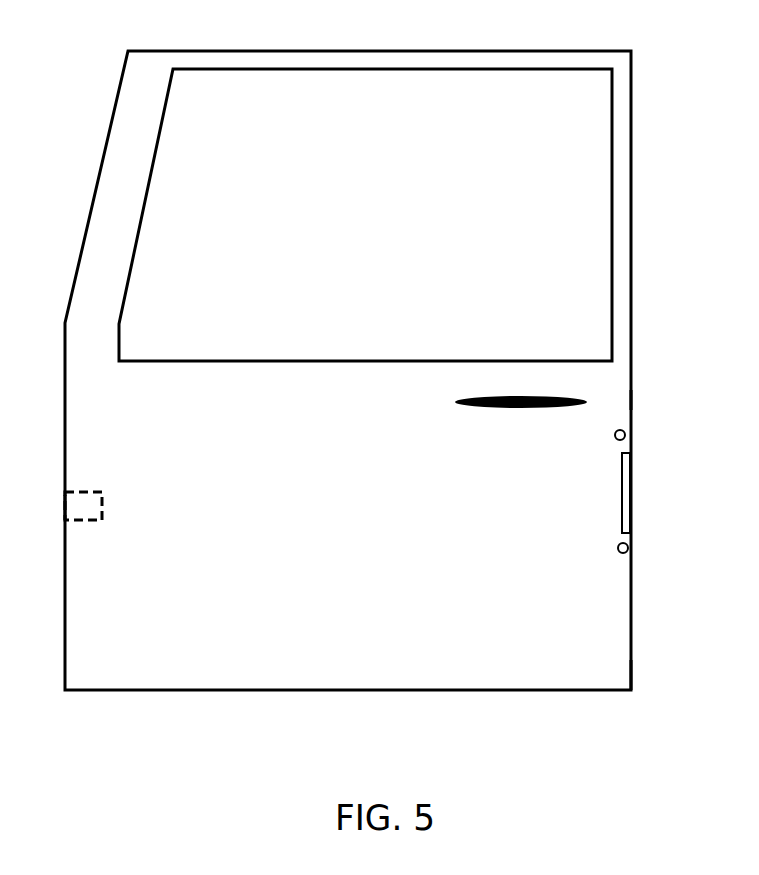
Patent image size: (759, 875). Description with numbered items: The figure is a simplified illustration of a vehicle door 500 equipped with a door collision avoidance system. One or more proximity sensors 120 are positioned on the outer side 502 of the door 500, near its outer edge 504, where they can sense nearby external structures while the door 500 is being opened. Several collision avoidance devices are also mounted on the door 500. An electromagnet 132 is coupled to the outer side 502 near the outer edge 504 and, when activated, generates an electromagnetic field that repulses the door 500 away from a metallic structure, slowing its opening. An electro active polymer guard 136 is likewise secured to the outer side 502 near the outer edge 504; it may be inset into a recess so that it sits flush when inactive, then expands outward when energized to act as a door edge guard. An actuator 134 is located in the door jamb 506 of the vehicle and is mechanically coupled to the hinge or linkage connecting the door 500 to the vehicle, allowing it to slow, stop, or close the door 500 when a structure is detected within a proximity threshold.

The vehicle door 500 is at (393, 50).
The outer side 502 is at (612, 663).
The outer edge 504 is at (631, 400).
The door jamb 506 is at (43, 506).
The proximity sensor 120 is at (614, 436).
The electromagnet 132 is at (617, 549).
The actuator 134 is at (93, 492).
The electro active polymer (EAP) guard 136 is at (622, 517).